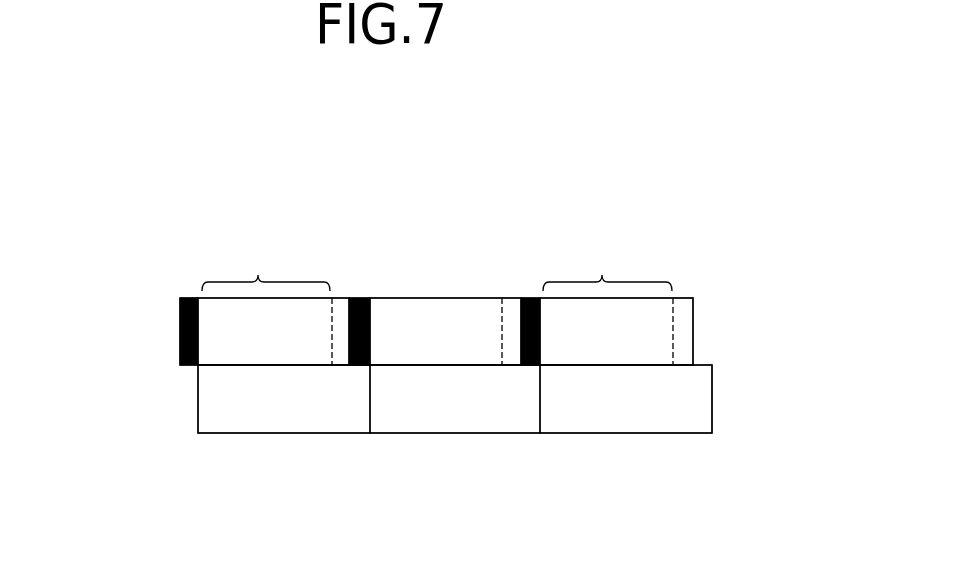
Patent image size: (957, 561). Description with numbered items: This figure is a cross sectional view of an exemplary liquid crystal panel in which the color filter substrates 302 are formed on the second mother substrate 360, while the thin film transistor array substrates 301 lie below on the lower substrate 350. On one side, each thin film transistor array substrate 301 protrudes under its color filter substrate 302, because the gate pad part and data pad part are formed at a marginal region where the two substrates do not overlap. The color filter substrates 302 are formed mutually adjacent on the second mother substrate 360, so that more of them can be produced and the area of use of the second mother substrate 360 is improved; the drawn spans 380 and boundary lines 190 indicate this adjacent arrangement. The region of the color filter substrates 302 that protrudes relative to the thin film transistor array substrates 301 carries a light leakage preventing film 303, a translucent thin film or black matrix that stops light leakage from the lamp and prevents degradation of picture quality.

The second mother substrate 360 is at (170, 333).
The lower layer 350 is at (170, 399).
The light leakage preventing film 303 is at (195, 297).
The boundary line 190 is at (340, 312).
The pixel region 380 is at (437, 269).
The color filter substrate 302 is at (263, 345).
The thin film transistor array substrate 301 is at (307, 395).